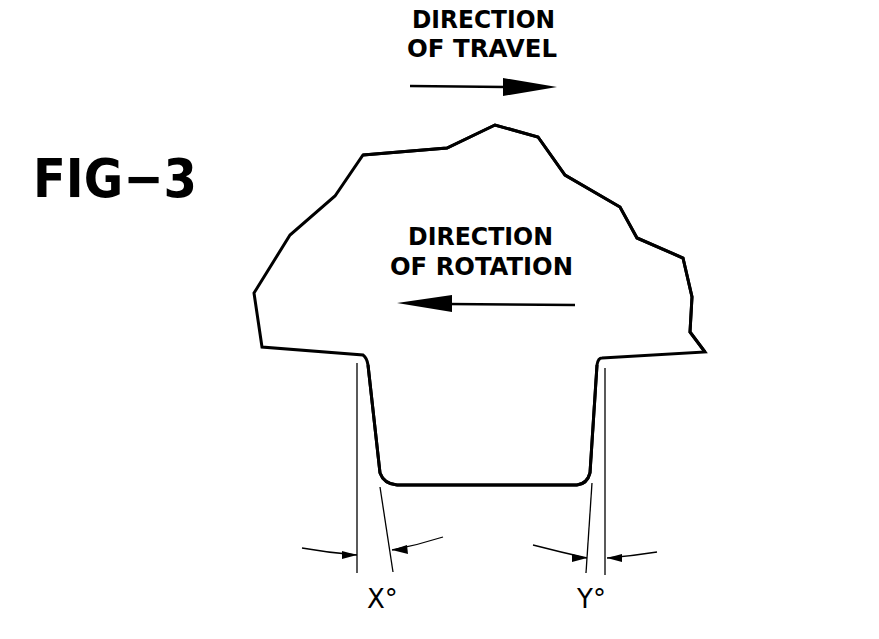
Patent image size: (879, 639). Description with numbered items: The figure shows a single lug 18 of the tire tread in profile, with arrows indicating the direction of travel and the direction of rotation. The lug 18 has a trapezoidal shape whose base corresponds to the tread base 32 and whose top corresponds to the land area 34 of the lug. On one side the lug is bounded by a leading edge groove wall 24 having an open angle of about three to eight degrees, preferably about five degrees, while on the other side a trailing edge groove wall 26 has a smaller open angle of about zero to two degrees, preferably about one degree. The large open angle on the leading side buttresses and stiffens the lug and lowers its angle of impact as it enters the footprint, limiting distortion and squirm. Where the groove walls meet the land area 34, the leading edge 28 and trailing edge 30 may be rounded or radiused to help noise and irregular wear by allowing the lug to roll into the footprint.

The lug 18 is at (252, 543).
The leading edge groove wall 24 is at (371, 395).
The trailing edge groove wall 26 is at (597, 398).
The leading edge 28 is at (378, 468).
The trailing edge 30 is at (590, 475).
The tread base 32 is at (668, 298).
The land area 34 is at (462, 488).